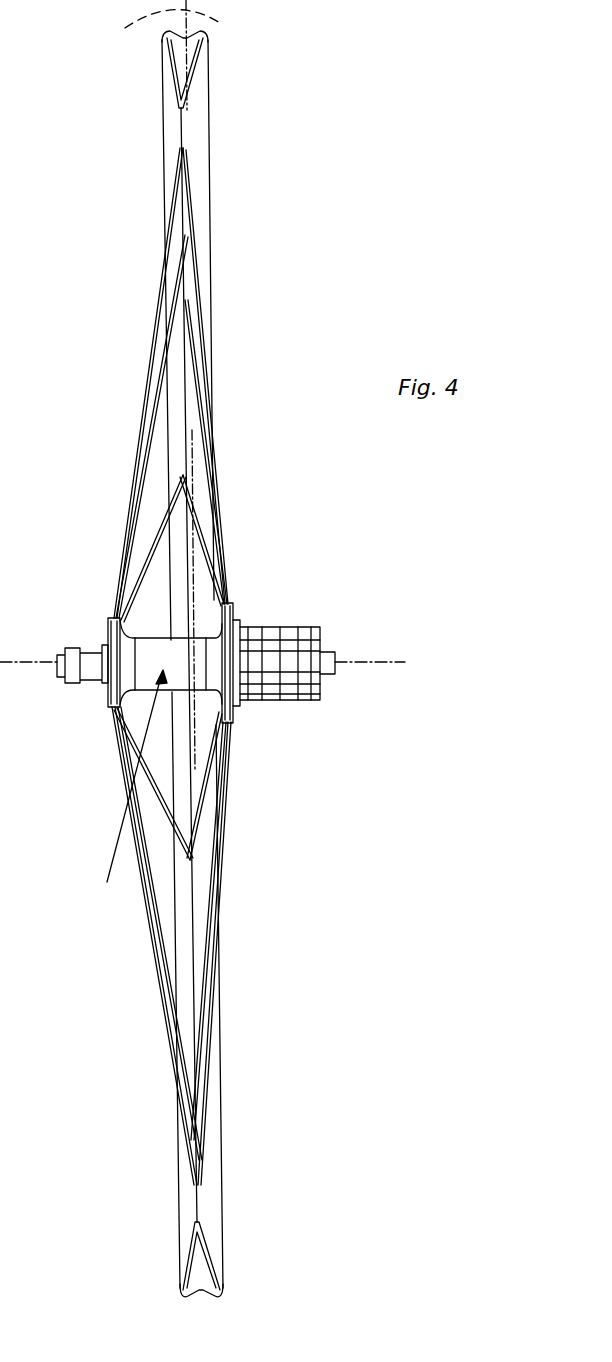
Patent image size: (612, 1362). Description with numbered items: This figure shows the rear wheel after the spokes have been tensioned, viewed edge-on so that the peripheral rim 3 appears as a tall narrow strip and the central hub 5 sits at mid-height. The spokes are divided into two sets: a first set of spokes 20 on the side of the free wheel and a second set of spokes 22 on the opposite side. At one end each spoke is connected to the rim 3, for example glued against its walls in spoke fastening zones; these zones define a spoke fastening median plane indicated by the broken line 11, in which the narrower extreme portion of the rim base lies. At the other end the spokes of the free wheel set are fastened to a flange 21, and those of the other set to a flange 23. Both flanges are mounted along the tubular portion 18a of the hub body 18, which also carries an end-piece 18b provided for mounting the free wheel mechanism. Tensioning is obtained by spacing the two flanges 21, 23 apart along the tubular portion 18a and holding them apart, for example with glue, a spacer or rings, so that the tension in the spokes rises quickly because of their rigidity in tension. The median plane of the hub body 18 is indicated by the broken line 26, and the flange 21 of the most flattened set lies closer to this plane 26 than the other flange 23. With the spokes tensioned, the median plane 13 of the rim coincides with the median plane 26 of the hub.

The spoke fastening median plane 11 is at (140, 27).
The median plane of the rim 13 is at (216, 24).
The rim 3 is at (198, 143).
The median plane of the hub 26 is at (200, 472).
The tubular portion 18a is at (147, 648).
The hub 5 is at (279, 614).
The end-piece 18b is at (305, 632).
The flange 23 is at (124, 733).
The flange 21 is at (203, 740).
The hub body 18 is at (133, 806).
The second set of spokes 22 is at (165, 1002).
The first set of spokes 20 is at (205, 1023).